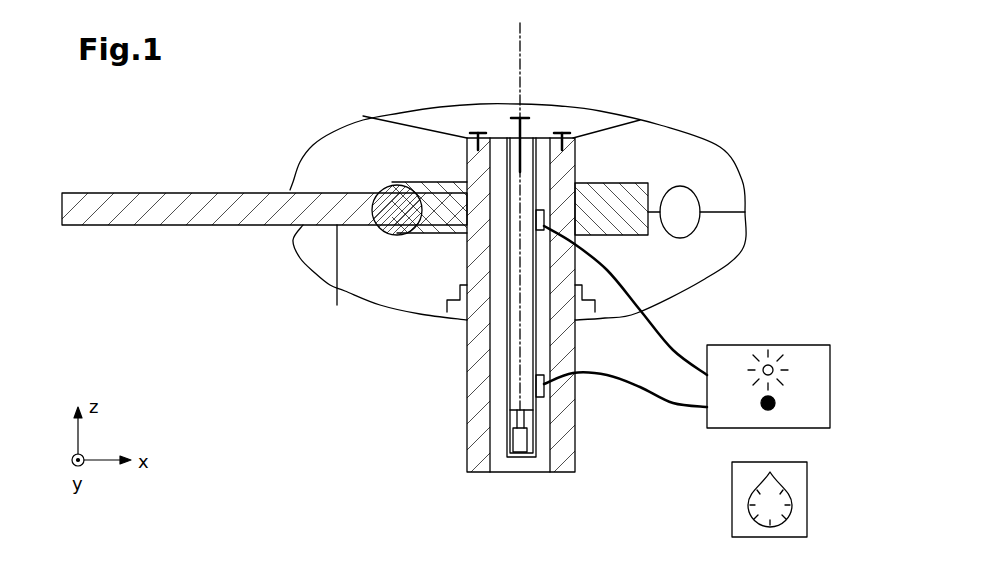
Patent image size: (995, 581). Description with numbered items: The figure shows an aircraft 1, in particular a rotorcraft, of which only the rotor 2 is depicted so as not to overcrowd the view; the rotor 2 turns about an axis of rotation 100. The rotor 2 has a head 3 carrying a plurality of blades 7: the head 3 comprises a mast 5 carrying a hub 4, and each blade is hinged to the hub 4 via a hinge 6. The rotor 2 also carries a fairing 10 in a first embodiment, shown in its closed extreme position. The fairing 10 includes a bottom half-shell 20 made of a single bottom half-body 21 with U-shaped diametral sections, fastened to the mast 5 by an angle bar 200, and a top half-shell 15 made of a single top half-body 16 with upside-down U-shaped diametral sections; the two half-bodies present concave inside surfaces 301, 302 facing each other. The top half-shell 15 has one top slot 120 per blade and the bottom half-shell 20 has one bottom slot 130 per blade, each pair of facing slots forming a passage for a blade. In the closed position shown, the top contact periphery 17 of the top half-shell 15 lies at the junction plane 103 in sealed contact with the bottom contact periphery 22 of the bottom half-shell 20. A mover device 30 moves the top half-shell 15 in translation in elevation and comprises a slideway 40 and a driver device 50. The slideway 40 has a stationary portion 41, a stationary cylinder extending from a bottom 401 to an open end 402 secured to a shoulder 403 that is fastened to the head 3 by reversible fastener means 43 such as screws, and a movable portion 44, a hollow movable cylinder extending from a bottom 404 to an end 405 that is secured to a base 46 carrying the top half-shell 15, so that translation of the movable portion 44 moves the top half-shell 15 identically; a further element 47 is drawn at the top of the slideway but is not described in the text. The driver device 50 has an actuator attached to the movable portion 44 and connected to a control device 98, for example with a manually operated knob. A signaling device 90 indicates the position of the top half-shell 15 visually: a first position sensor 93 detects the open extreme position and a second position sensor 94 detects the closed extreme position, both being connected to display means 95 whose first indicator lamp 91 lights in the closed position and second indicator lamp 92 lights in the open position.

The aircraft 1 is at (320, 353).
The rotor 2 is at (694, 63).
The head 3 is at (609, 165).
The hub 4 is at (427, 197).
The mast 5 is at (478, 442).
The hinge 6 is at (399, 218).
The blades 7 is at (290, 208).
The fairing 10 is at (287, 129).
The top half-shell 15 is at (754, 176).
The top half-body 16 is at (725, 150).
The top contact periphery 17 is at (735, 194).
The bottom half-shell 20 is at (744, 257).
The bottom half-body 21 is at (697, 288).
The bottom contact periphery 22 is at (740, 238).
The mover device 30 is at (491, 372).
The slideway 40 is at (491, 323).
The stationary portion 41 is at (497, 470).
The reversible fastener means 43 is at (475, 130).
The movable portion 44 is at (546, 140).
The base 46 is at (607, 145).
The central screw 47 is at (517, 104).
The driver device 50 is at (527, 441).
The signaling device 90 is at (722, 443).
The first indicator lamp 91 is at (782, 366).
The second indicator lamp 92 is at (776, 403).
The first position sensor 93 is at (545, 215).
The second position sensor 94 is at (547, 388).
The display means 95 is at (830, 355).
The control device 98 is at (808, 520).
The axis of rotation 100 is at (517, 36).
The junction plane 103 is at (745, 212).
The top slot 120 is at (677, 198).
The bottom slot 130 is at (684, 230).
The angle bar 200 is at (447, 298).
The concave inside surface 301 is at (320, 151).
The concave inside surface 302 is at (325, 273).
The bottom 401 is at (523, 452).
The open end 402 is at (472, 132).
The shoulder 403 is at (560, 130).
The bottom 404 is at (525, 413).
The end 405 is at (535, 140).